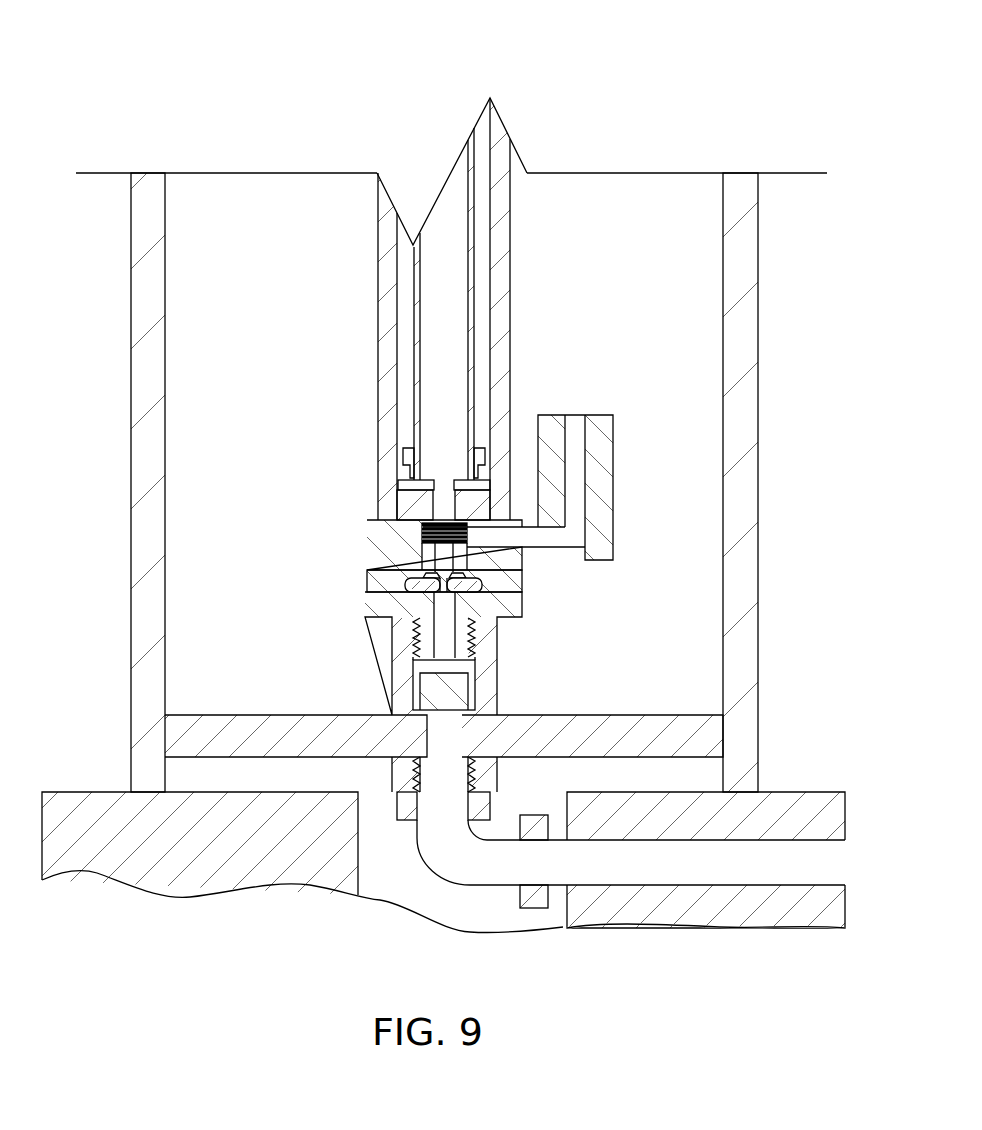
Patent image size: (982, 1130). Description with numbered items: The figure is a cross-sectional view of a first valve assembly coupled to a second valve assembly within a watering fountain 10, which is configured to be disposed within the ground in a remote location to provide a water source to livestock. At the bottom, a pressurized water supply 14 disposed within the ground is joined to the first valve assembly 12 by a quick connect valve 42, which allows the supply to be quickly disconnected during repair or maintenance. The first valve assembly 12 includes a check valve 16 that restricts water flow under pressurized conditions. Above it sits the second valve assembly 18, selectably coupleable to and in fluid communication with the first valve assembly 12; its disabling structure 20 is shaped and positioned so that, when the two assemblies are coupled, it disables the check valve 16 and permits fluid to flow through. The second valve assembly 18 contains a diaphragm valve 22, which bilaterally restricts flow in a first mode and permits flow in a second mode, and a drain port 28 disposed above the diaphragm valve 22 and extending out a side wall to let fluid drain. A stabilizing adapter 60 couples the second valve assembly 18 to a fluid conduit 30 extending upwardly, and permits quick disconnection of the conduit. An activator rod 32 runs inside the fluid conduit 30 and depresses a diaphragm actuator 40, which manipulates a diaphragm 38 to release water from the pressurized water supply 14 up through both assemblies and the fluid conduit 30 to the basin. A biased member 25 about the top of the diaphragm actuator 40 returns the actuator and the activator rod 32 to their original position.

The watering fountain 10 is at (672, 110).
The first valve assembly 12 is at (522, 733).
The pressurized water supply 14 is at (705, 868).
The check valve 16 is at (432, 696).
The second valve assembly 18 is at (367, 545).
The disabling structure 20 is at (510, 612).
The diaphragm valve 22 is at (370, 583).
The biased member 25 is at (423, 527).
The drain port 28 is at (605, 485).
The fluid conduit 30 is at (495, 253).
The activator rod 32 is at (472, 293).
The diaphragm 38 is at (493, 587).
The diaphragm actuator 40 is at (443, 557).
The quick connect valve 42 is at (390, 773).
The stabilizing adapter 60 is at (395, 498).